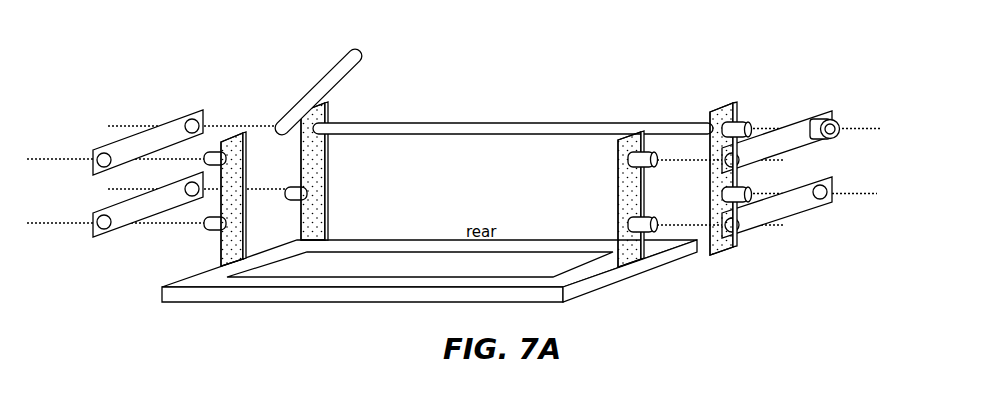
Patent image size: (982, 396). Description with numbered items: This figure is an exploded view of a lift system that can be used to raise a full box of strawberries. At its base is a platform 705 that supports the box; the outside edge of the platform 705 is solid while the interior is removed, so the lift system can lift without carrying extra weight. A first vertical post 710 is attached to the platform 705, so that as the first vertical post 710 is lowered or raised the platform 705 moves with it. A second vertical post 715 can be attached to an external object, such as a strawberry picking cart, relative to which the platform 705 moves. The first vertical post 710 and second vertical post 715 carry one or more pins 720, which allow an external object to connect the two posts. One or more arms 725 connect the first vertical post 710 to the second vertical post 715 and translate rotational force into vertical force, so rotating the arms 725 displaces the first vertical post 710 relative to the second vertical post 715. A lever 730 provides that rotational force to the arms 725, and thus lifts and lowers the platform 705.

The platform 705 is at (151, 308).
The first vertical post 710 is at (205, 252).
The second vertical post 715 is at (739, 89).
The pins 720 is at (655, 138).
The arms 725 is at (792, 147).
The lever 730 is at (319, 55).